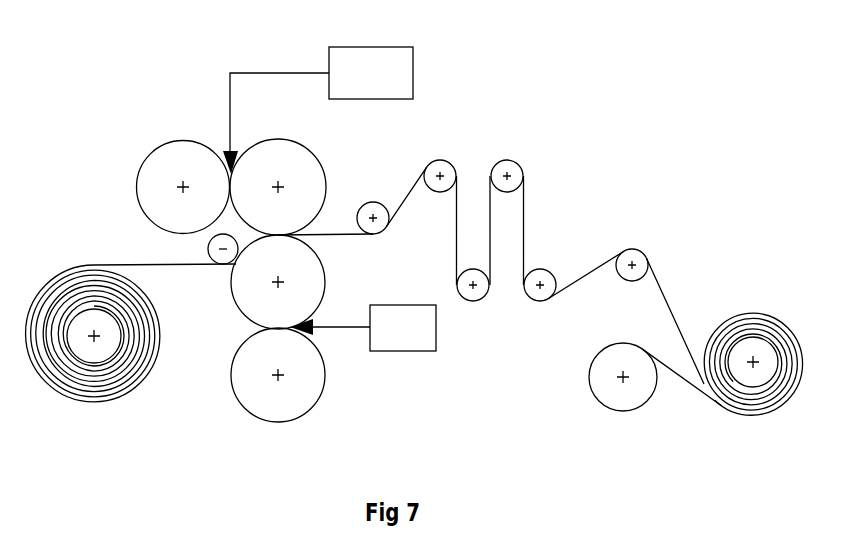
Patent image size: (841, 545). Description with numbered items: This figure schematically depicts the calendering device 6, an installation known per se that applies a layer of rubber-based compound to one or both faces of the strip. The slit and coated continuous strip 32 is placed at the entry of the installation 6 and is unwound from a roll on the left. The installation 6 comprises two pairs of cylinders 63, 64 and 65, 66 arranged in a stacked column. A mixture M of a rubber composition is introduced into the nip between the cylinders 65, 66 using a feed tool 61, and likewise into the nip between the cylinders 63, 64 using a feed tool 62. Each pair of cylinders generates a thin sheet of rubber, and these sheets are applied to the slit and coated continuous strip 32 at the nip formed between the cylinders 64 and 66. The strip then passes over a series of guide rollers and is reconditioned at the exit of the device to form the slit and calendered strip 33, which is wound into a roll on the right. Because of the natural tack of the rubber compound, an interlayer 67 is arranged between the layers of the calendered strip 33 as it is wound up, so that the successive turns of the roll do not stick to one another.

The calendering device 6 is at (610, 153).
The slit and coated continuous strip 32 is at (83, 282).
The slit and calendered strip 33 is at (738, 322).
The feed tool 61 is at (392, 75).
The feed tool 62 is at (400, 329).
The cylinder 63 is at (312, 383).
The cylinder 64 is at (308, 272).
The cylinder 65 is at (168, 162).
The cylinder 66 is at (292, 168).
The interlayer 67 is at (683, 380).
The mixture M is at (227, 157).